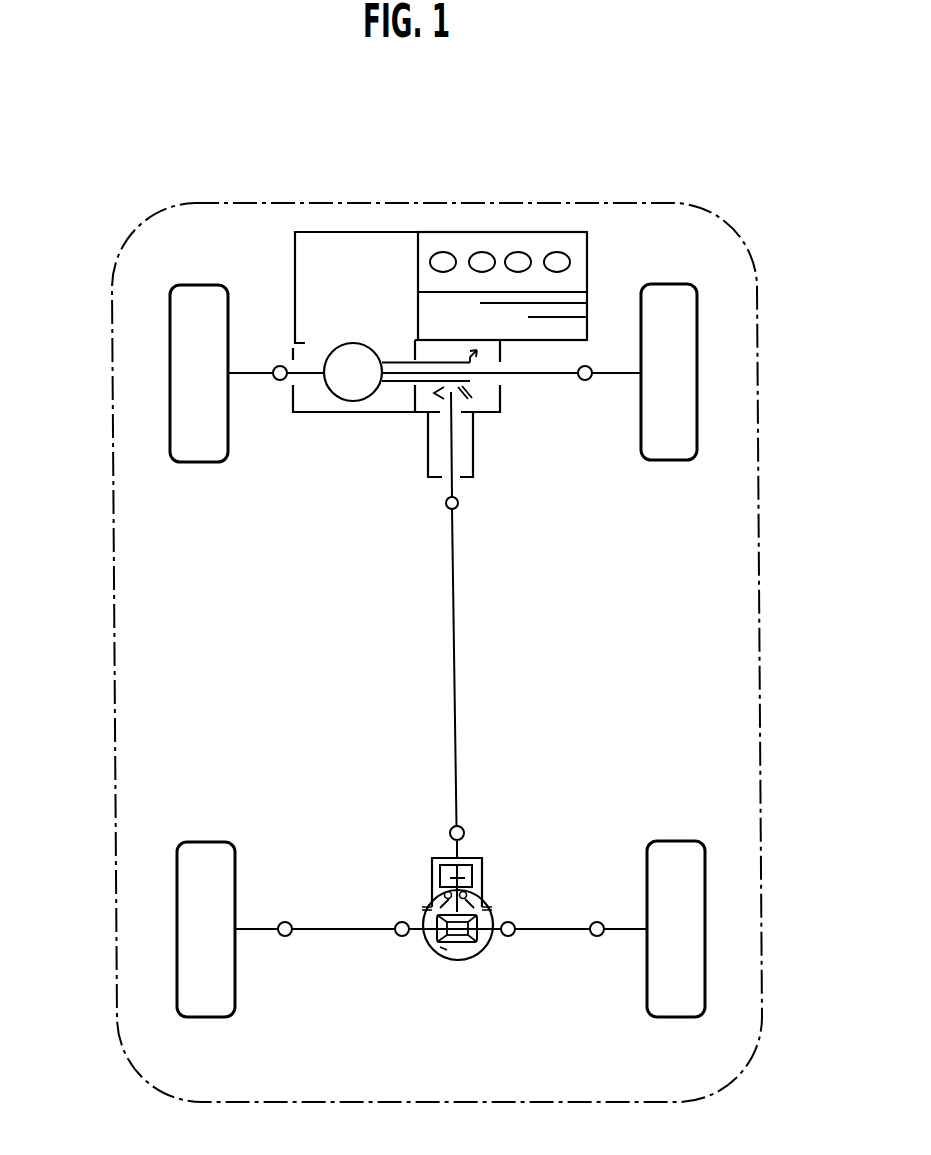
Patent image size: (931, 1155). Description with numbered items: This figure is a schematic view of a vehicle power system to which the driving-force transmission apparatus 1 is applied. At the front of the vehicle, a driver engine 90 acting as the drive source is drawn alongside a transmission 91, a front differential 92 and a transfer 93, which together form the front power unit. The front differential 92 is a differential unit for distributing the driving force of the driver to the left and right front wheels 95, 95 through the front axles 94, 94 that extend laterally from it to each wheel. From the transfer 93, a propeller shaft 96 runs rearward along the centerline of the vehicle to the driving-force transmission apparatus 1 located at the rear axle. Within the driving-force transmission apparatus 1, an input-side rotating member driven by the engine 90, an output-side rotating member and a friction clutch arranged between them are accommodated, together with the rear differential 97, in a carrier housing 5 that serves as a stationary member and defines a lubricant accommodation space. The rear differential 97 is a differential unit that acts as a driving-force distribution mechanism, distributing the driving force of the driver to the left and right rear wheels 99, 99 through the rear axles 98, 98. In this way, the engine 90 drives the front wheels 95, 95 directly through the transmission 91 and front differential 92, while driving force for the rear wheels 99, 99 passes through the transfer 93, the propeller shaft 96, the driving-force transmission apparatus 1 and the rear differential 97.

The driving-force transmission apparatus 1 is at (484, 870).
The carrier housing 5 is at (430, 863).
The engine 90 is at (505, 216).
The transmission 91 is at (348, 216).
The front differential 92 is at (332, 395).
The transfer 93 is at (509, 406).
The front axle 94 is at (253, 371).
The front wheel 95 is at (177, 317).
The propeller shaft 96 is at (454, 618).
The rear differential 97 is at (465, 957).
The rear axle 98 is at (320, 929).
The rear wheel 99 is at (188, 887).